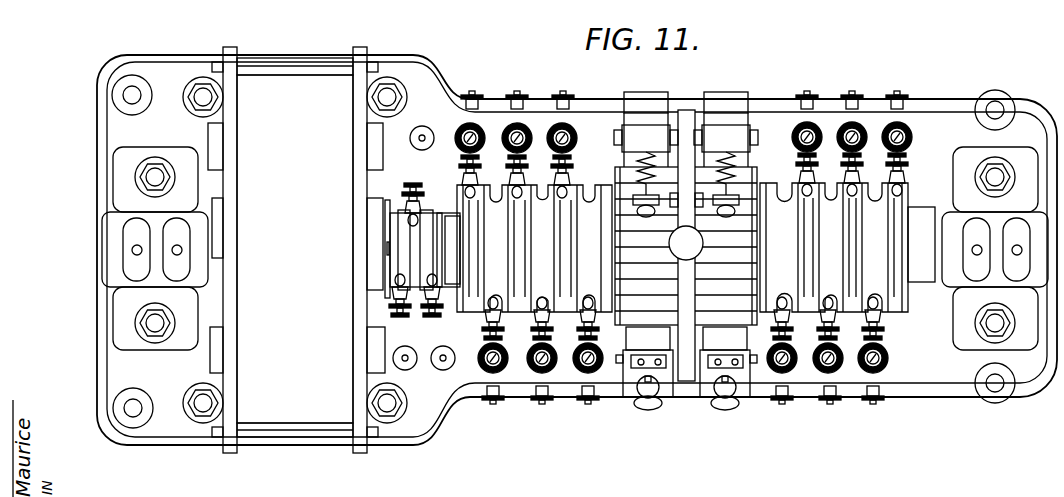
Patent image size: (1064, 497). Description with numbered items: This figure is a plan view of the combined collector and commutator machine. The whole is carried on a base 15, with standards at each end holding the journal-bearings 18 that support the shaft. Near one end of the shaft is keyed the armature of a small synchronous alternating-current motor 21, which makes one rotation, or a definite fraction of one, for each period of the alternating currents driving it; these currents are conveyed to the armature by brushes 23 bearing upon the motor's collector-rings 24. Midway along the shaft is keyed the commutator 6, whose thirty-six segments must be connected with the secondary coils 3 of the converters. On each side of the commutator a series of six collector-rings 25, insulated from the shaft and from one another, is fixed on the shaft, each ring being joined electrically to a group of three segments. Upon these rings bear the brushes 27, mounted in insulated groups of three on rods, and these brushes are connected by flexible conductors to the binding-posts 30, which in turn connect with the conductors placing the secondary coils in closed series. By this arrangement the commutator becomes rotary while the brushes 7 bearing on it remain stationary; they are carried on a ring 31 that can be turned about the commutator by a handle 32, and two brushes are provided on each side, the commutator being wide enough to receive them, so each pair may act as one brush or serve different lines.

The secondary coil 3 is at (717, 165).
The commutator 6 is at (686, 246).
The brushes 7 is at (686, 368).
The base 15 is at (577, 250).
The journal-bearings 18 is at (562, 248).
The alternating-current motor 21 is at (296, 250).
The brushes 23 is at (416, 247).
The collector-rings 24 is at (417, 253).
The collector-rings 25 is at (587, 268).
The brushes 27 is at (572, 185).
The binding-posts 30 is at (478, 135).
The ring 31 is at (703, 273).
The handle 32 is at (686, 245).